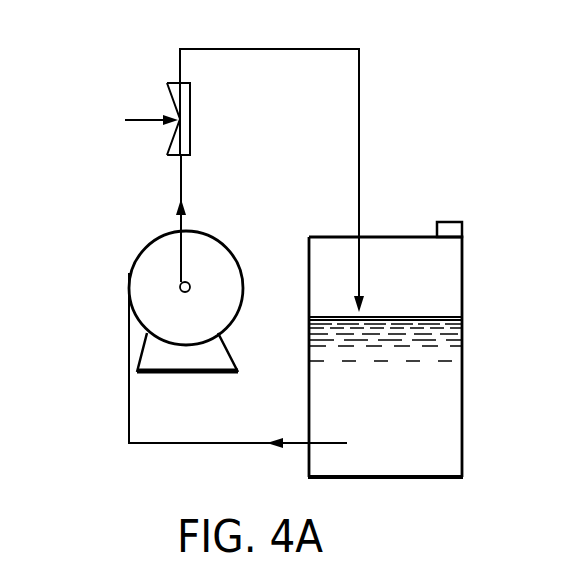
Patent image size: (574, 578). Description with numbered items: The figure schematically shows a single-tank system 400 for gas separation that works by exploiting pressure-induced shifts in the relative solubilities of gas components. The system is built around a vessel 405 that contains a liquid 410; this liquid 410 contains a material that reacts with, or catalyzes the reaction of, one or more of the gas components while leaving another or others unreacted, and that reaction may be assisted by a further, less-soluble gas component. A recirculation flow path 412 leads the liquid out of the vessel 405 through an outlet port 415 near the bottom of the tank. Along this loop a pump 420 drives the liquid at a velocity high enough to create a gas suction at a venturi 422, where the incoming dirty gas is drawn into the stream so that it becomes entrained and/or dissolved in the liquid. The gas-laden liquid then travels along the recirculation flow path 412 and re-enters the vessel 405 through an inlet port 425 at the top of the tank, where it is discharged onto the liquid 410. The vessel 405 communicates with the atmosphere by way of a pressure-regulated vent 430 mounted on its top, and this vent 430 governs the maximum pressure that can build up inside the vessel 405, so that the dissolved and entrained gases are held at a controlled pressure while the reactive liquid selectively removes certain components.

The single-tank system 400 is at (443, 72).
The vessel 405 is at (463, 381).
The liquid 410 is at (435, 436).
The recirculation flow path 412 is at (317, 48).
The outlet port 415 is at (309, 440).
The pump 420 is at (226, 244).
The venturi 422 is at (190, 119).
The inlet port 425 is at (361, 237).
The pressure-regulated vent 430 is at (456, 222).